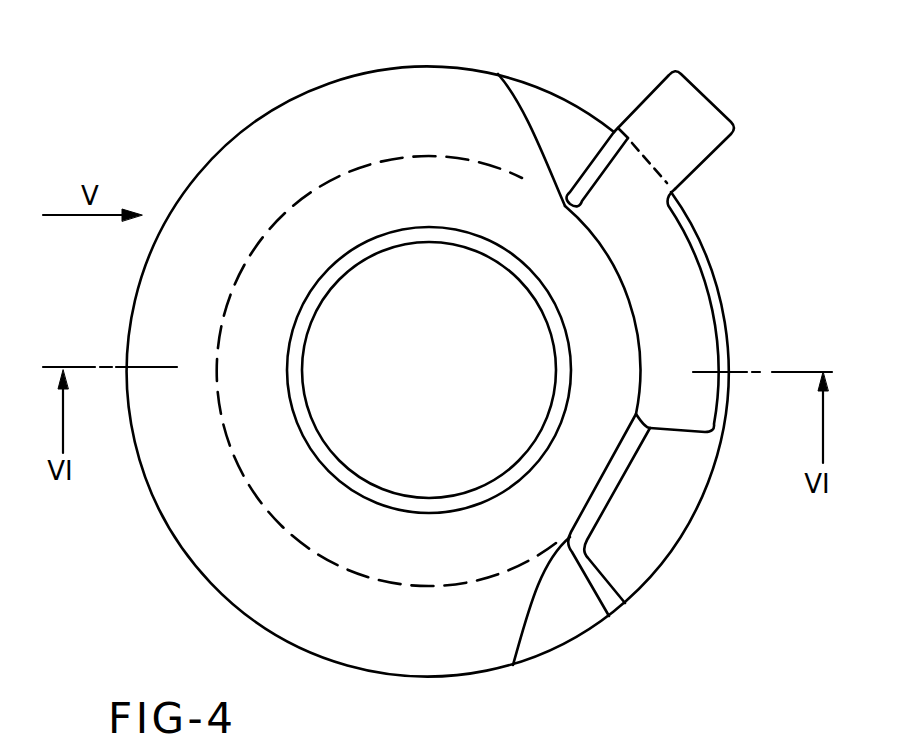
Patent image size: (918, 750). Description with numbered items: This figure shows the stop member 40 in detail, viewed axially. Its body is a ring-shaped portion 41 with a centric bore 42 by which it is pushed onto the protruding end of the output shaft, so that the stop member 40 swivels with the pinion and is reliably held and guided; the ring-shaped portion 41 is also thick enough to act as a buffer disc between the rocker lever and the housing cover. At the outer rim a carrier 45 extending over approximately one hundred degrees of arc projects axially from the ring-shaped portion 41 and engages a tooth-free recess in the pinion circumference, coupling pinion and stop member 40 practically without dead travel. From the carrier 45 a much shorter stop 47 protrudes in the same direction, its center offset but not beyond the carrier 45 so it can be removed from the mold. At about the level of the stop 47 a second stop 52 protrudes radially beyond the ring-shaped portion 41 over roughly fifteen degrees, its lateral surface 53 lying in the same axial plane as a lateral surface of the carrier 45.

The stop member 40 is at (185, 617).
The ring-shaped portion 41 is at (207, 552).
The centric bore 42 is at (467, 359).
The carrier 45 is at (637, 572).
The stop 47 is at (700, 348).
The second stop 52 is at (720, 135).
The lateral surface 53 is at (647, 95).